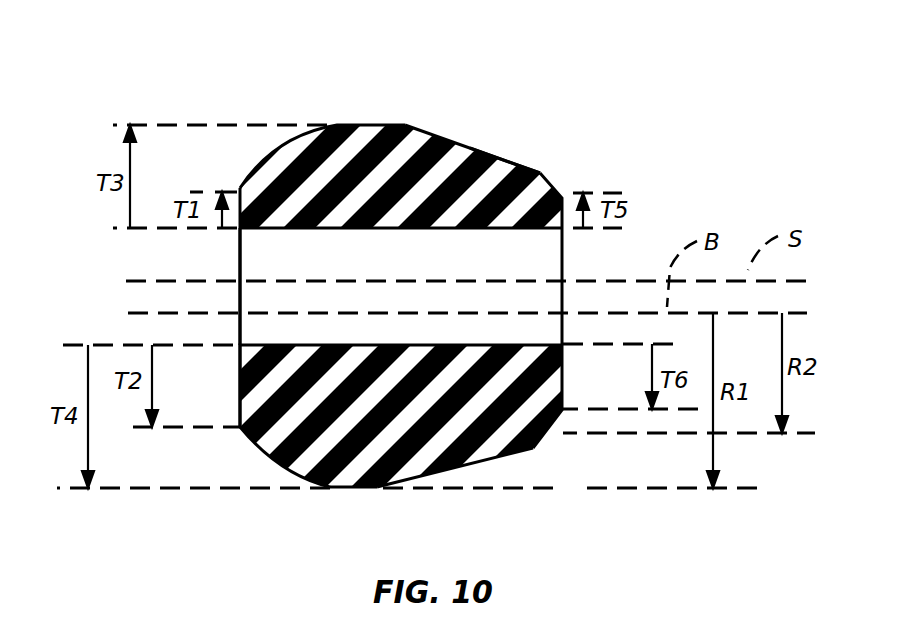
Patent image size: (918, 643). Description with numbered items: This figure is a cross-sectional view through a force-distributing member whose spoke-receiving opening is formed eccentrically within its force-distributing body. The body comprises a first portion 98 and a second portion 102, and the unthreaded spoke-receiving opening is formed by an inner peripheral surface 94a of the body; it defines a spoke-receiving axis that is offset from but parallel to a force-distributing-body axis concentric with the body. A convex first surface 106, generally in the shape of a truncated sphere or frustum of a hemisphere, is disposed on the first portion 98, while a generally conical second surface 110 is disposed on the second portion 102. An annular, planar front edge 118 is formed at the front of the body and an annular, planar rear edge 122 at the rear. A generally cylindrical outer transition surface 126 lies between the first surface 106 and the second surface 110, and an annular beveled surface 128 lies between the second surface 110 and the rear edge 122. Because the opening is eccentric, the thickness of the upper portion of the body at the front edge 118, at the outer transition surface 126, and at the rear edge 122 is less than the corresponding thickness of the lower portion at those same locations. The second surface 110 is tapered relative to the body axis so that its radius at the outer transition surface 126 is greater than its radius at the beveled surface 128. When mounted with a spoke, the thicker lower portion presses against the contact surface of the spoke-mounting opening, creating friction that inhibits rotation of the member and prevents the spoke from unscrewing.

The second portion 102 is at (448, 115).
The second surface 110 is at (503, 160).
The beveled surface 128 is at (545, 176).
The inner peripheral surface 94a is at (495, 231).
The front edge 118 is at (240, 382).
The rear edge 122 is at (564, 372).
The first surface 106 is at (270, 457).
The first portion 98 is at (296, 501).
The outer transition surface 126 is at (373, 488).